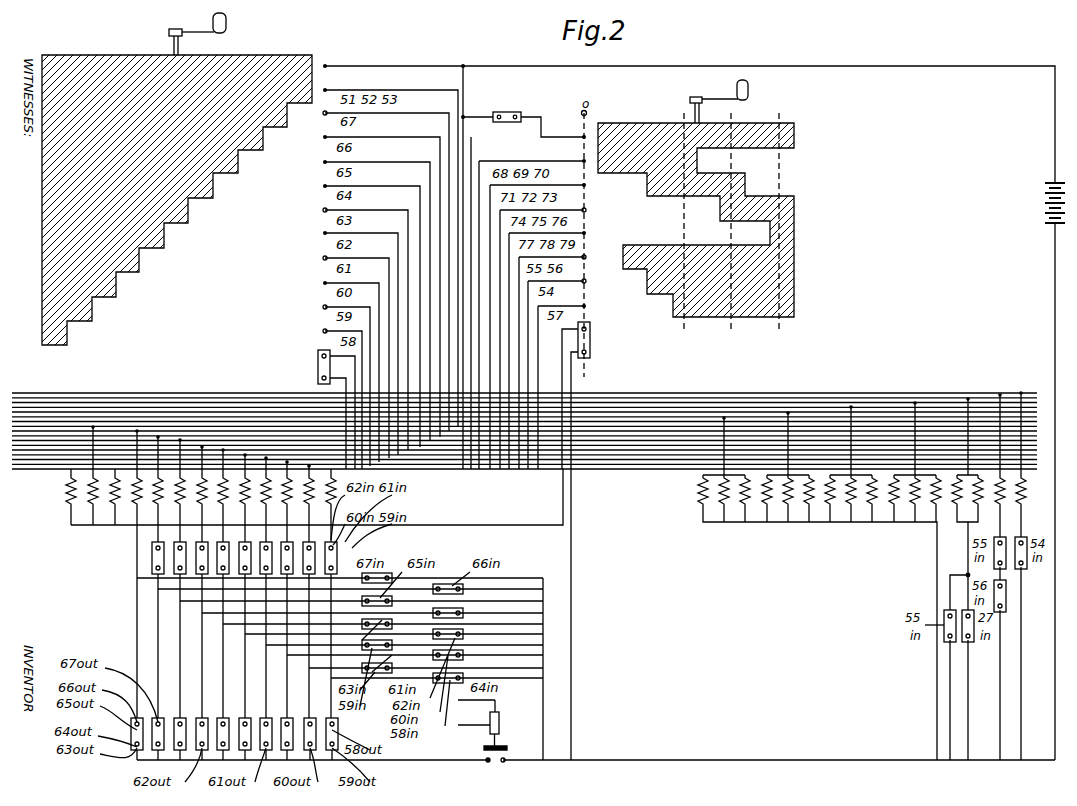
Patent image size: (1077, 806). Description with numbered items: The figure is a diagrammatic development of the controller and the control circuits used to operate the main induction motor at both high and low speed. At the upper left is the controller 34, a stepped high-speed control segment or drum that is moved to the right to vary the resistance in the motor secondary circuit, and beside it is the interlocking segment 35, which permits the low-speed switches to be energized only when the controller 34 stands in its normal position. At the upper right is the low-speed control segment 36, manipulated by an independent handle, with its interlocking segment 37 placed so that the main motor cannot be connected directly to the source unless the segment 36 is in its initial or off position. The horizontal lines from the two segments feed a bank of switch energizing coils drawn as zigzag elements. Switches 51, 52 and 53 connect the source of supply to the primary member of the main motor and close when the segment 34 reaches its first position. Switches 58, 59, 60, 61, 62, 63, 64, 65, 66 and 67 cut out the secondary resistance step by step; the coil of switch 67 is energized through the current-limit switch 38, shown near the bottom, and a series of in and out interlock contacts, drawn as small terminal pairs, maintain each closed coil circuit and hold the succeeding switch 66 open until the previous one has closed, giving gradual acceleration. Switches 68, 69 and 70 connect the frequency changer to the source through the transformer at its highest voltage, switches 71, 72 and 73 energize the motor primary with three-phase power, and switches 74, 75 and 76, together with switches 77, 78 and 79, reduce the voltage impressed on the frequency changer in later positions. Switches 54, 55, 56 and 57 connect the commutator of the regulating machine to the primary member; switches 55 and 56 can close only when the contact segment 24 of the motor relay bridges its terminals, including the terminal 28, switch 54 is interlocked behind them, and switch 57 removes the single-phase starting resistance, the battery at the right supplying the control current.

The contact segment 24 is at (950, 640).
The terminal 28 is at (968, 640).
The controller 34 is at (177, 179).
The interlocking segment 35 is at (318, 368).
The low-speed control segment 36 is at (778, 268).
The interlocking segment 37 is at (590, 340).
The current-limit switch 38 is at (500, 726).
The switch 51 is at (59, 497).
The switch 52 is at (82, 503).
The switch 53 is at (110, 530).
The switch 54 is at (993, 499).
The switch 55 is at (950, 499).
The switch 56 is at (971, 499).
The switch 57 is at (1015, 499).
The switch 58 is at (325, 499).
The switch 59 is at (303, 499).
The switch 60 is at (281, 499).
The switch 61 is at (259, 499).
The switch 62 is at (238, 499).
The switch 63 is at (216, 499).
The switch 64 is at (194, 499).
The switch 65 is at (172, 499).
The switch 66 is at (150, 499).
The switch 67 is at (129, 499).
The switch 68 is at (694, 499).
The switch 69 is at (716, 499).
The switch 70 is at (738, 499).
The switch 71 is at (760, 499).
The switch 72 is at (781, 499).
The switch 73 is at (802, 499).
The switch 74 is at (823, 499).
The switch 75 is at (844, 499).
The switch 76 is at (865, 499).
The switch 77 is at (886, 499).
The switch 78 is at (908, 499).
The switch 79 is at (929, 499).